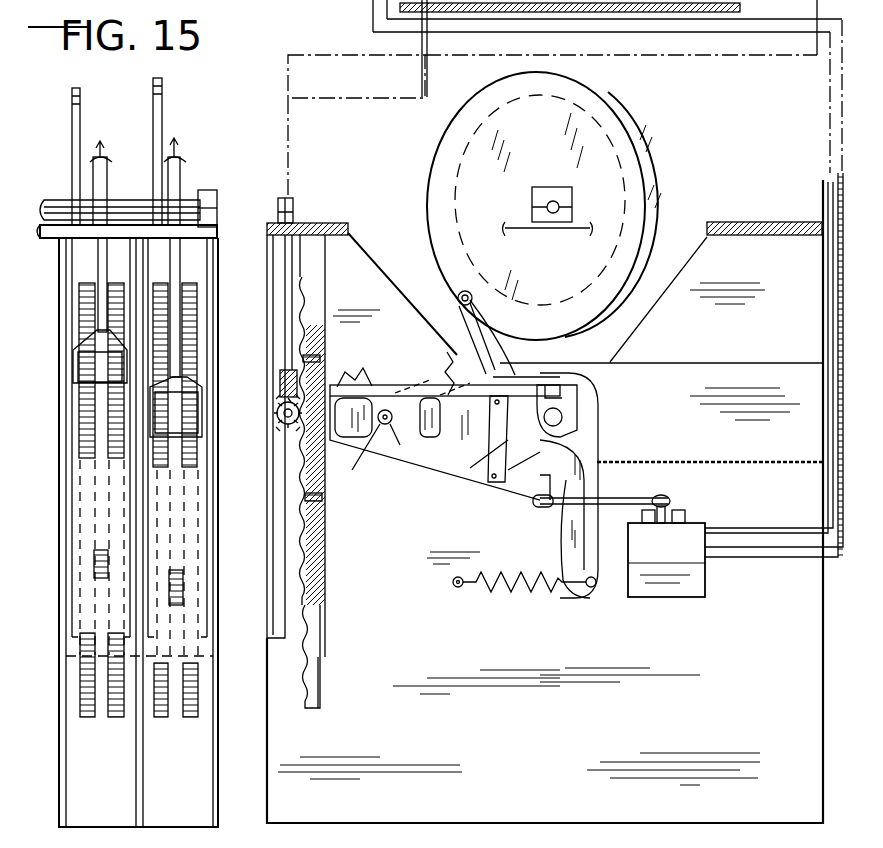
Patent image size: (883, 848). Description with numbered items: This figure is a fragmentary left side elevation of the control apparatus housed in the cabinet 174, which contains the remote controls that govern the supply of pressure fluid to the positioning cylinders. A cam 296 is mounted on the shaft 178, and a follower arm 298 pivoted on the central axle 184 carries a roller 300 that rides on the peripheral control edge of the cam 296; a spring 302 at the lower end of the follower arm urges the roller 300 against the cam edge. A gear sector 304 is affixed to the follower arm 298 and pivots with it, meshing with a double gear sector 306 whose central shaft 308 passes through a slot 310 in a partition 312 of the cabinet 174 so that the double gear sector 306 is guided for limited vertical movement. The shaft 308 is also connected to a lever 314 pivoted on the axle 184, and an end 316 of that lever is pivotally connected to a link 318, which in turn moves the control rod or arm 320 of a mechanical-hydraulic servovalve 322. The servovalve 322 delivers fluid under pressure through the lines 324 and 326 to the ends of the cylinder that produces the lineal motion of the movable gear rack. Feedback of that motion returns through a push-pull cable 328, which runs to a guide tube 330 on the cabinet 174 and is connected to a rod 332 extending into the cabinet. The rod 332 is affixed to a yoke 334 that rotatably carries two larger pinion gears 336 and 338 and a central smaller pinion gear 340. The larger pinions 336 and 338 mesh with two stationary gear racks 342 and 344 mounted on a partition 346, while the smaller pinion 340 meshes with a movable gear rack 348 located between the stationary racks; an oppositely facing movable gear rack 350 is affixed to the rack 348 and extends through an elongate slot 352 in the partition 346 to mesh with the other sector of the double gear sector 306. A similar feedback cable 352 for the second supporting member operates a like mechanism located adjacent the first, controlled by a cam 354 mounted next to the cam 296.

The cabinet 174 is at (274, 183).
The shaft 178 is at (55, 202).
The central axle 184 is at (576, 411).
The cam 296 is at (162, 100).
The follower arm 298 is at (500, 312).
The roller 300 is at (472, 288).
The spring 302 is at (530, 590).
The gear sector 304 is at (468, 475).
The double gear sector 306 is at (410, 462).
The central shaft 308 is at (373, 392).
The slot 310 is at (386, 430).
The partition 312 is at (383, 268).
The lever 314 is at (442, 468).
The end 316 is at (540, 498).
The link 318 is at (623, 498).
The control rod or arm 320 is at (664, 496).
The mechanical-hydraulic servovalve 322 is at (650, 570).
The line 324 is at (842, 152).
The line 326 is at (762, 528).
The push-pull cable 328 is at (176, 158).
The guide tube 330 is at (294, 212).
The rod 332 is at (180, 250).
The yoke 334 is at (290, 396).
The larger pinion gear 336 is at (190, 440).
The larger pinion gear 338 is at (160, 440).
The central smaller pinion gear 340 is at (178, 409).
The stationary gear rack 342 is at (200, 716).
The stationary gear rack 344 is at (164, 717).
The partition 346 is at (327, 618).
The movable gear rack 348 is at (290, 337).
The oppositely facing movable gear rack 350 is at (330, 487).
The elongate slot 352 is at (100, 157).
The cam 354 is at (78, 112).